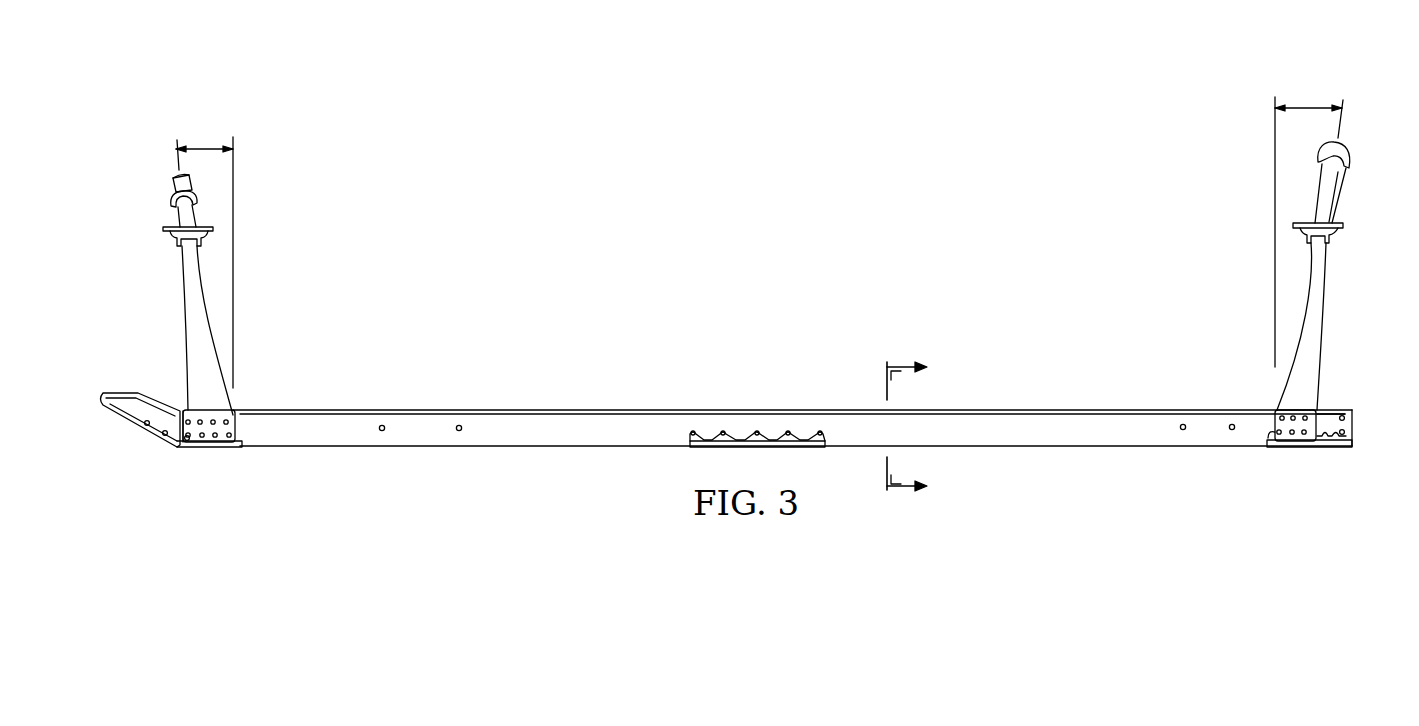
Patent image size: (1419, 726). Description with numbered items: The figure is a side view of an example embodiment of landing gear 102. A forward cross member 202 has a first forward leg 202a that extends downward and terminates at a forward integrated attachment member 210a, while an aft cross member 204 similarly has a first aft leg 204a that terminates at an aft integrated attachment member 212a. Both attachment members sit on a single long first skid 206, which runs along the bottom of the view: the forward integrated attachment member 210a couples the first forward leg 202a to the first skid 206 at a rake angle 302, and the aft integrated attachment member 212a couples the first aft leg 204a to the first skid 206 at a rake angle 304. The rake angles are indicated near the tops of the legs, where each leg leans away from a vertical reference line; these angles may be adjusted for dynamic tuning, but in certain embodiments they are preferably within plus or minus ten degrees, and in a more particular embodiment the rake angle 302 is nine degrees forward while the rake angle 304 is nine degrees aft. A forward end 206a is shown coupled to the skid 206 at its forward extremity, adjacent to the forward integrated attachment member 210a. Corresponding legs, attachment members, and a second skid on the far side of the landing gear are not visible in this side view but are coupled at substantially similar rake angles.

The landing gear 102 is at (752, 280).
The forward cross member 202 is at (222, 292).
The first forward leg 202a is at (205, 277).
The aft cross member 204 is at (1289, 289).
The first aft leg 204a is at (1305, 272).
The first skid 206 is at (532, 449).
The forward end 206a is at (122, 418).
The forward integrated attachment member 210a is at (187, 380).
The aft integrated attachment member 212a is at (1320, 375).
The rake angle 302 is at (205, 147).
The rake angle 304 is at (1312, 107).